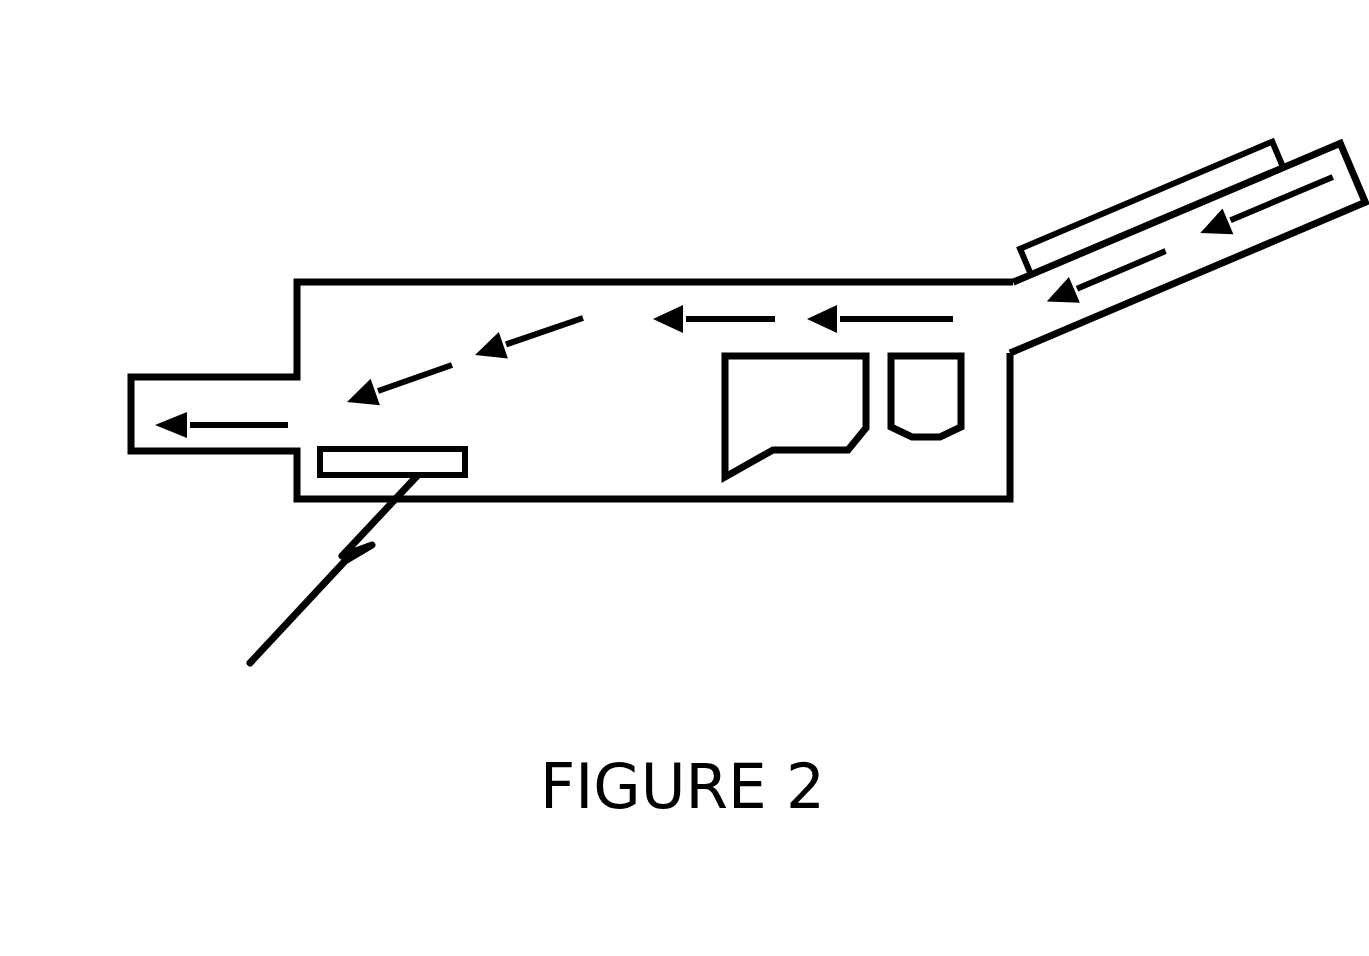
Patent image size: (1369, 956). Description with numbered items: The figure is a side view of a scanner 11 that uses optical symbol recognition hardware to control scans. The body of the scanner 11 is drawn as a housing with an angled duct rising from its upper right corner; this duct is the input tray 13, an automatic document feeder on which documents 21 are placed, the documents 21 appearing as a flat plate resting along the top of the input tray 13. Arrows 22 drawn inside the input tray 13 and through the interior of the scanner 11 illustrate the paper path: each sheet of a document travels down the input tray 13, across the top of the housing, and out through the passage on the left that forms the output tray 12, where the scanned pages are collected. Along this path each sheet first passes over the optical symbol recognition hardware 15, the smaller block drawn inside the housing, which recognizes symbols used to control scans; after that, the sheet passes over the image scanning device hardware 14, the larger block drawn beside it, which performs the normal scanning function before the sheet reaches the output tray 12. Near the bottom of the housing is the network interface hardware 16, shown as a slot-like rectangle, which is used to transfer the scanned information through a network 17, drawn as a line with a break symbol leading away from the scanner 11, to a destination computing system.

The scanner 11 is at (977, 503).
The output tray 12 is at (192, 453).
The input tray 13 is at (1213, 268).
The image scanning device hardware 14 is at (858, 438).
The optical symbol recognition hardware 15 is at (926, 447).
The network interface hardware 16 is at (468, 462).
The network 17 is at (311, 619).
The documents 21 is at (1245, 150).
The arrows 22 is at (397, 380).